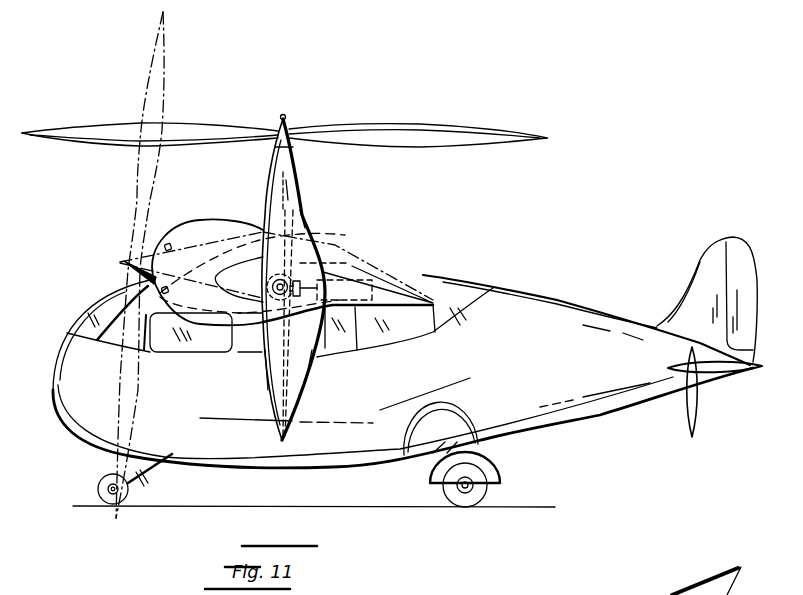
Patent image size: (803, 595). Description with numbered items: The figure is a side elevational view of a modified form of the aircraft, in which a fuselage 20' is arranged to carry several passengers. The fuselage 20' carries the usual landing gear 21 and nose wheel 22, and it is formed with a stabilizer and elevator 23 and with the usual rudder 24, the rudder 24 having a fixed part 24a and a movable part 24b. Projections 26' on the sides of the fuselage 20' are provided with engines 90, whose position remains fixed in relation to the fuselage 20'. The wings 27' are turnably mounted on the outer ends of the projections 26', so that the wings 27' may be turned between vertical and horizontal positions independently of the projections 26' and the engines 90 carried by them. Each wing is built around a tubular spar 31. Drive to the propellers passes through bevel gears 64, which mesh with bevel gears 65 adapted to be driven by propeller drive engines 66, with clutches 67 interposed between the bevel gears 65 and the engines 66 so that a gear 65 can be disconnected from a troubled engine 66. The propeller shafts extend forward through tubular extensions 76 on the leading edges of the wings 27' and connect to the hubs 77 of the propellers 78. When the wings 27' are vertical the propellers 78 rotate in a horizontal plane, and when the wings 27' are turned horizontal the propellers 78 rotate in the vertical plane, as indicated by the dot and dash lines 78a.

The fuselage 20' is at (403, 371).
The landing gear 21 is at (500, 478).
The nose wheel 22 is at (99, 495).
The stabilizer and elevator 23 is at (733, 374).
The rudder 24 is at (748, 305).
The fixed part 24a is at (707, 272).
The movable part 24b is at (743, 256).
The projections 26' is at (290, 328).
The wings 27' is at (276, 326).
The tubular spar 31 is at (280, 302).
The bevel gears 64 is at (279, 370).
The bevel gears 65 is at (303, 223).
The propeller drive engines 66 is at (372, 282).
The clutches 67 is at (310, 363).
The tubular extensions 76 is at (292, 190).
The hubs 77 is at (285, 115).
The propellers 78 is at (422, 130).
The dot and dash lines indicating propeller position 78a is at (163, 53).
The engines 90 is at (207, 230).